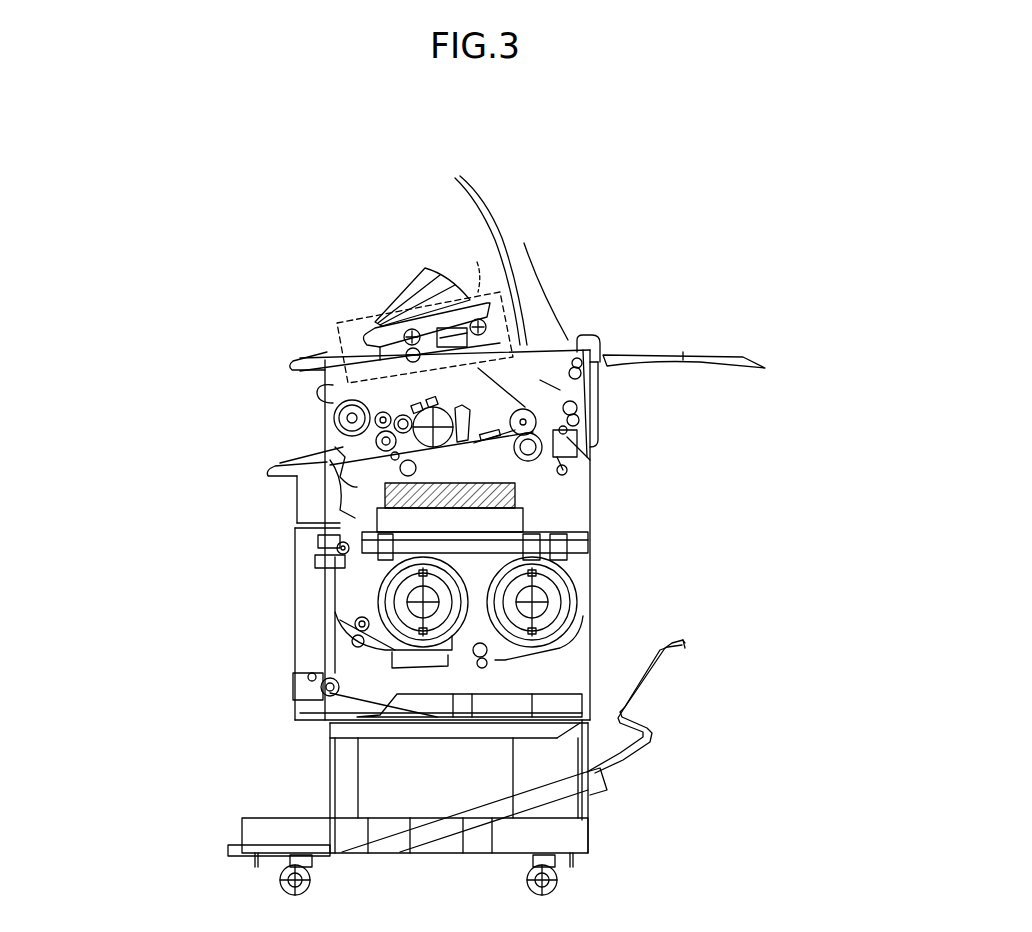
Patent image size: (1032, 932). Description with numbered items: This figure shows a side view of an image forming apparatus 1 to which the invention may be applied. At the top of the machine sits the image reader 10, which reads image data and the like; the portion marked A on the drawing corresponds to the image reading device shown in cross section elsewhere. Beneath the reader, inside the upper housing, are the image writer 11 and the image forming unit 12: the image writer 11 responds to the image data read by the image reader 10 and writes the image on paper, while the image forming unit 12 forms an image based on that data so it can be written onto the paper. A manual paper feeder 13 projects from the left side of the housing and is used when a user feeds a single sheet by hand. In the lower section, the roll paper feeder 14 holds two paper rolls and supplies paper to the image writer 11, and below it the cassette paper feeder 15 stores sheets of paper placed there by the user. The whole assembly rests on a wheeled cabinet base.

The image forming apparatus 1 is at (292, 172).
The image reader 10 is at (432, 332).
The image writer 11 is at (410, 400).
The image forming unit 12 is at (463, 402).
The manual paper feeder 13 is at (285, 448).
The roll paper feeder 14 is at (473, 573).
The cassette paper feeder 15 is at (445, 692).